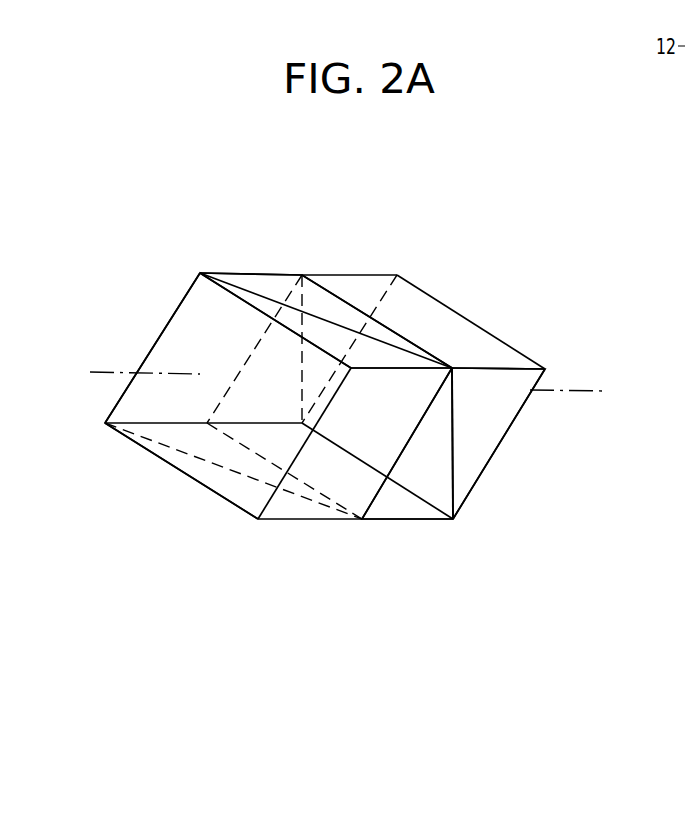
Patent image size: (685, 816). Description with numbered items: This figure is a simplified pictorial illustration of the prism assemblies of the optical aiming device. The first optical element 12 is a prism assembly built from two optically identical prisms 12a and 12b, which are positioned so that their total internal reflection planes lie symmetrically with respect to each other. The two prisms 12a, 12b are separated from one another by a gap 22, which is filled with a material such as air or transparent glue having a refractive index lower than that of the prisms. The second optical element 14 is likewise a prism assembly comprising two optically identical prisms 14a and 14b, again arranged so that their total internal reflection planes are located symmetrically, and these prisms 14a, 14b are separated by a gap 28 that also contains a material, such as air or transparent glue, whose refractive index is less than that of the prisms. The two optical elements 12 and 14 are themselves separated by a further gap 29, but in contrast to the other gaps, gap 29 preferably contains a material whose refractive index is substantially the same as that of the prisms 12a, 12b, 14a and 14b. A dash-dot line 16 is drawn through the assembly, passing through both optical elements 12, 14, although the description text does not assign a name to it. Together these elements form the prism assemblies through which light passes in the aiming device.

The optical element 12 is at (254, 236).
The prism 12a is at (206, 284).
The prism 12b is at (288, 283).
The optical element 14 is at (478, 297).
The prism 14a is at (393, 505).
The prism 14b is at (482, 418).
The optical axis 16 is at (100, 372).
The gap 22 is at (335, 312).
The gap 28 is at (457, 460).
The gap 29 is at (370, 503).